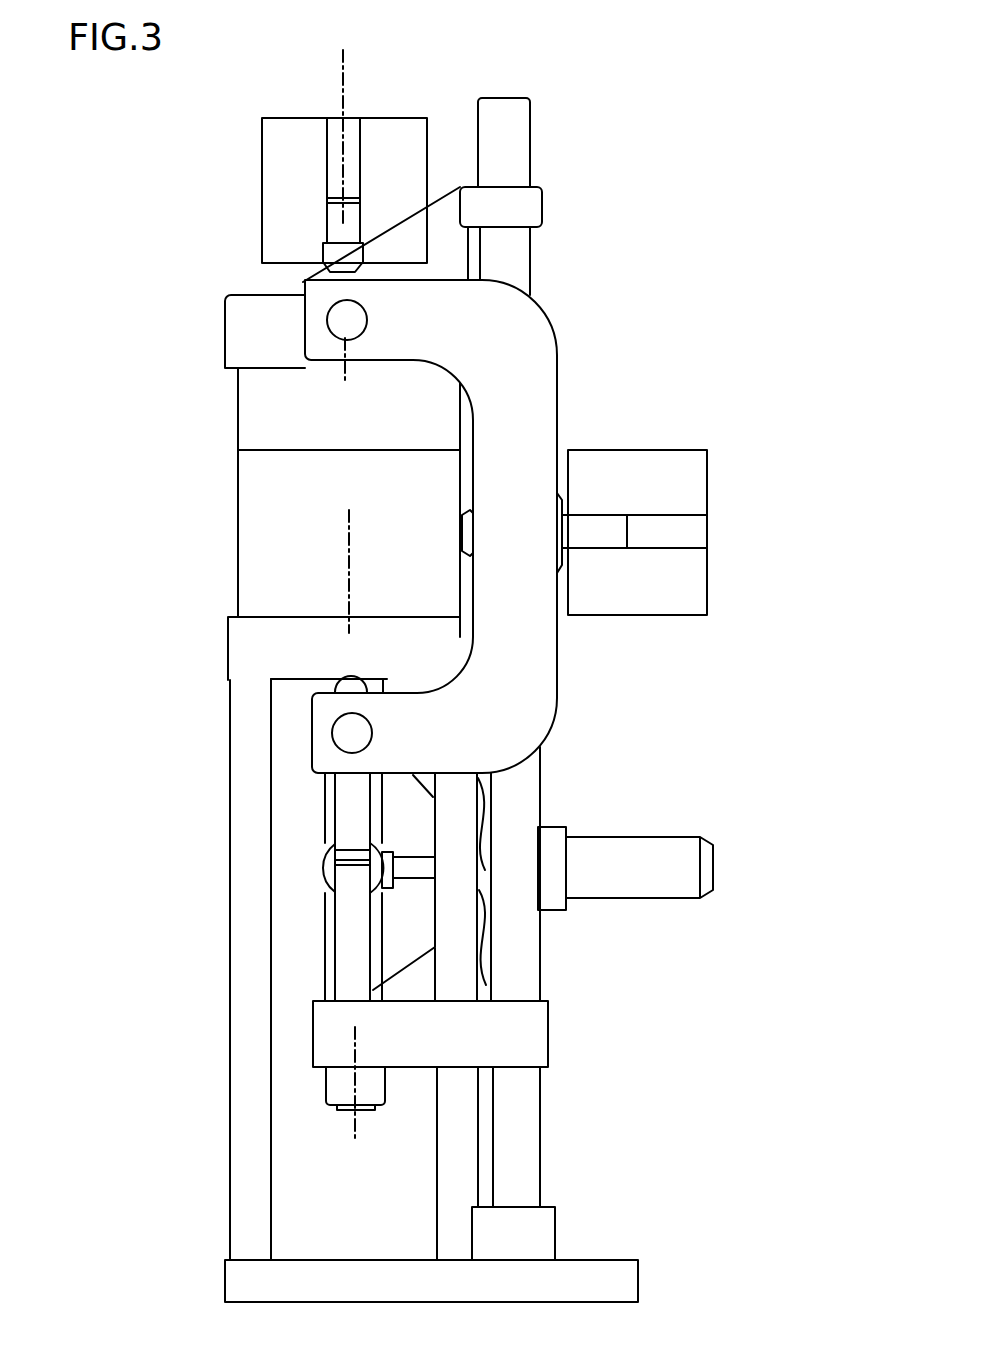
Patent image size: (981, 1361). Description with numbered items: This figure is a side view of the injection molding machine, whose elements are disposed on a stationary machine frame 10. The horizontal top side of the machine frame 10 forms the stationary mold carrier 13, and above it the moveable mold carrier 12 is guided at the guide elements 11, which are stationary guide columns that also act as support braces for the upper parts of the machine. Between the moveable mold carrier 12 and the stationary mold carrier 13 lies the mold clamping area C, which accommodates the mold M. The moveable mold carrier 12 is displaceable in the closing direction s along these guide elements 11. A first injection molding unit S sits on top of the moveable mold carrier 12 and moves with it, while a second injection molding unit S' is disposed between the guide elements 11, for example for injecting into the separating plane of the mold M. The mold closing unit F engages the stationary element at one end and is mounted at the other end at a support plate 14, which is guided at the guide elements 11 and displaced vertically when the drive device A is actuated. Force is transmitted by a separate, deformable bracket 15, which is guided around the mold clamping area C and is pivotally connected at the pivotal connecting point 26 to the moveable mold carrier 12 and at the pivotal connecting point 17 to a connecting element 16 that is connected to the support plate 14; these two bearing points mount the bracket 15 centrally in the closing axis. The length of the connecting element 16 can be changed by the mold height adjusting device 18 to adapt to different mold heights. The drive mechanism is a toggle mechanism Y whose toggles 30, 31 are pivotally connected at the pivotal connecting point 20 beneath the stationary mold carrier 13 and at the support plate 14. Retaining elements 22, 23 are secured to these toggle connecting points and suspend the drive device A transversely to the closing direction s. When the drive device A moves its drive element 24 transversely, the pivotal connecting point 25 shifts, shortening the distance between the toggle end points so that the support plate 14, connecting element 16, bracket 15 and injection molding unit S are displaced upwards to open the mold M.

The machine frame 10 is at (253, 1060).
The guide elements 11 is at (510, 253).
The moveable mold carrier 12 is at (242, 317).
The stationary mold carrier 13 is at (237, 615).
The support plate 14 is at (487, 1027).
The bracket 15 is at (515, 662).
The connecting element 16 is at (355, 922).
The pivotal connecting point 17 is at (333, 728).
The mold height adjusting device 18 is at (337, 1080).
The pivotal connecting point 20 is at (327, 683).
The retaining element 22 is at (412, 980).
The retaining element 23 is at (427, 780).
The drive element 24 is at (422, 870).
The pivotal connecting point 25 is at (333, 873).
The pivotal connecting point 26 is at (340, 310).
The toggle 30 is at (330, 982).
The toggle 31 is at (327, 827).
The injection molding unit S is at (301, 195).
The injection molding unit S' is at (632, 498).
The mold clamping area C is at (232, 491).
The mold M is at (395, 519).
The drive device A is at (677, 833).
The mold closing unit F is at (600, 748).
The toggle mechanism Y is at (637, 900).
The closing direction s is at (348, 599).